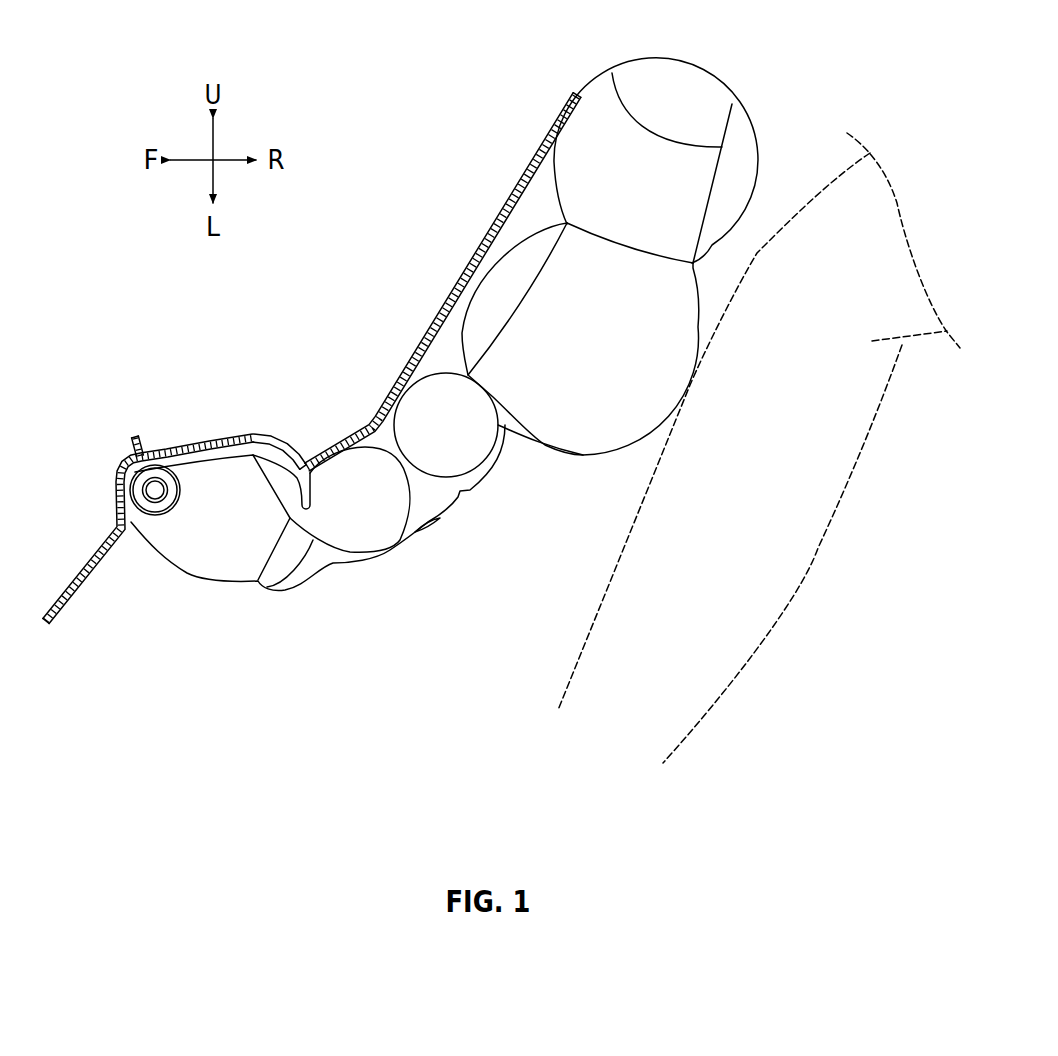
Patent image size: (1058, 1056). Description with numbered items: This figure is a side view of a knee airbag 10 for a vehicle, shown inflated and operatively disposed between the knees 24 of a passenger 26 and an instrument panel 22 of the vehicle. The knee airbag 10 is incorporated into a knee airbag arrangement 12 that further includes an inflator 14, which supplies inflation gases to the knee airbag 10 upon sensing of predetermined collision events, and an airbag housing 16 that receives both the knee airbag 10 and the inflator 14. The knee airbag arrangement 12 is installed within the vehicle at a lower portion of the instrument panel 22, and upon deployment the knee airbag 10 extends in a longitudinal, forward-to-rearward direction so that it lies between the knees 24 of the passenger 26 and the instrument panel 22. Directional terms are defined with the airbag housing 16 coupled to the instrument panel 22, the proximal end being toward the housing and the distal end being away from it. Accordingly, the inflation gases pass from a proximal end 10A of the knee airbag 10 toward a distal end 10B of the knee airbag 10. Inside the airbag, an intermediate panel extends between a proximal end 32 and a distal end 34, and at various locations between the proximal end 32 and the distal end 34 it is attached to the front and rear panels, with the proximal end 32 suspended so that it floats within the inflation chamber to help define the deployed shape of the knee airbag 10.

The knee airbag 10 is at (433, 340).
The proximal end of the airbag 10A is at (147, 538).
The distal end of the airbag 10B is at (689, 132).
The knee airbag arrangement 12 is at (464, 340).
The inflator 14 is at (137, 488).
The airbag housing 16 is at (245, 434).
The instrument panel 22 is at (312, 358).
The knees 24 is at (748, 658).
The passenger 26 is at (840, 520).
The proximal end of the intermediate panel 32 is at (258, 580).
The distal end of the intermediate panel 34 is at (612, 73).